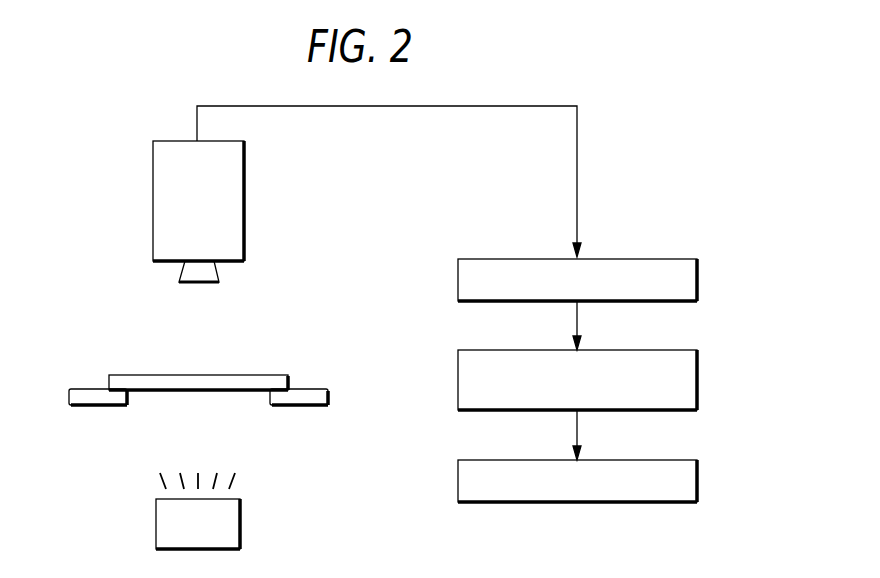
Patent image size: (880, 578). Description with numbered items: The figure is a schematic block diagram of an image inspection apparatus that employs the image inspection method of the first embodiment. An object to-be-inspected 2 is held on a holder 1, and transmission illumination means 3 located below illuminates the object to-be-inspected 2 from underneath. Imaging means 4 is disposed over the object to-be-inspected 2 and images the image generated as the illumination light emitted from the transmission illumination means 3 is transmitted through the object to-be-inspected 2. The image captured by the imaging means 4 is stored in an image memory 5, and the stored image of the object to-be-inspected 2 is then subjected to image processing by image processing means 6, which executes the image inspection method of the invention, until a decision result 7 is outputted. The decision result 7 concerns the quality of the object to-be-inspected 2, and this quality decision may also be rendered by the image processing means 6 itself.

The holder 1 is at (90, 389).
The object to-be-inspected 2 is at (245, 375).
The transmission illumination means 3 is at (241, 520).
The imaging means 4 is at (245, 197).
The image memory 5 is at (697, 277).
The image processing means 6 is at (697, 378).
The decision result 7 is at (697, 478).